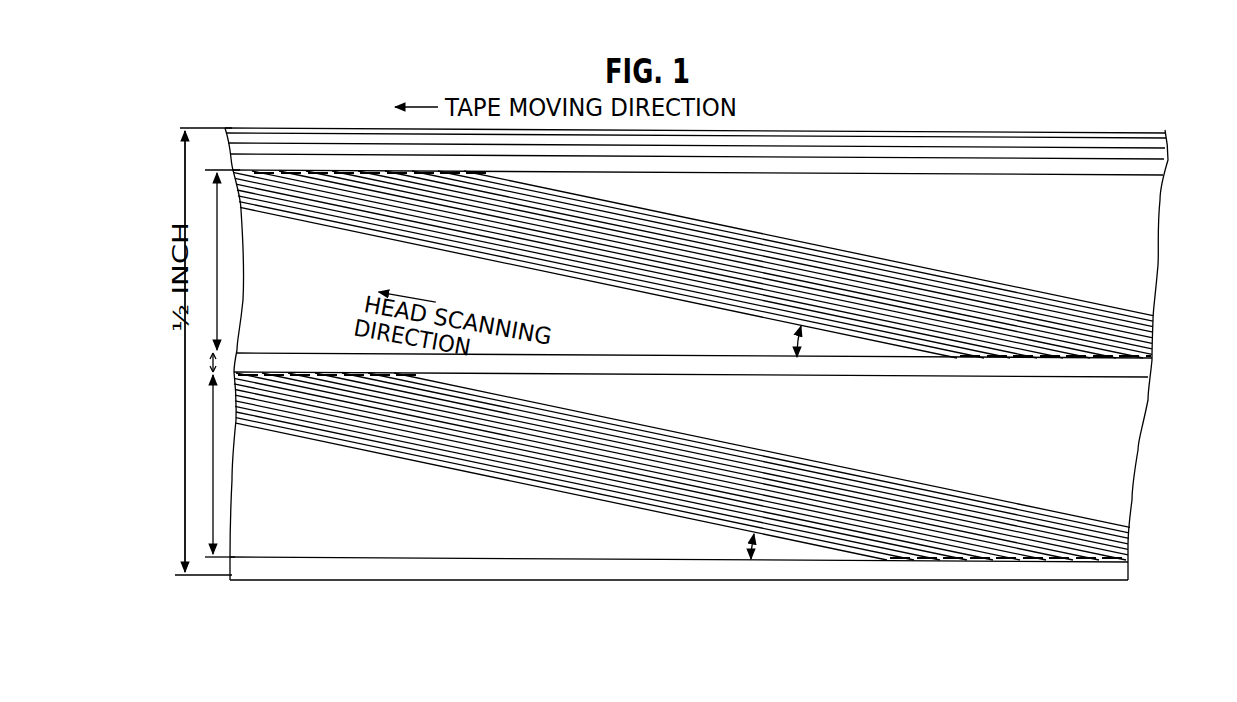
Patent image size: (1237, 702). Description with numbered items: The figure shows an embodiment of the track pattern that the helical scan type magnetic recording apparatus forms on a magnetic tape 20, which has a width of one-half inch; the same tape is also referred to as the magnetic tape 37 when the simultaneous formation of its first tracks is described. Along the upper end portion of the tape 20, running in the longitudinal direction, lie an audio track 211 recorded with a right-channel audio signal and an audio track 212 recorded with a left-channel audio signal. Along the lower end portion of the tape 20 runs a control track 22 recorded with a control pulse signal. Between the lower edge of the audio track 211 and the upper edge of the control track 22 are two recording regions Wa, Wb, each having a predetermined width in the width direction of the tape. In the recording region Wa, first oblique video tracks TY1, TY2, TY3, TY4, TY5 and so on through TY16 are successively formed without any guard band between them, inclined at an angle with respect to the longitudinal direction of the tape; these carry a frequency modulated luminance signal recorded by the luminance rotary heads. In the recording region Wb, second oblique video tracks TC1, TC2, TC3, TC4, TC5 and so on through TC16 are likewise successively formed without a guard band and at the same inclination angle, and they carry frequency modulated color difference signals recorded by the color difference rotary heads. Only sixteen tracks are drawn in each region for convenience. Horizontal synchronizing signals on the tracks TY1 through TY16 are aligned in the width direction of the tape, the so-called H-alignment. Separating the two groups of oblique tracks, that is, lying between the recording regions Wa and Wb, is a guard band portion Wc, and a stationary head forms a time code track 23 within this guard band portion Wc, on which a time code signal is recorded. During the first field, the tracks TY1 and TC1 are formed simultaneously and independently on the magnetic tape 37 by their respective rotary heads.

The magnetic tape 20 is at (1153, 265).
The magnetic tape 37 is at (1188, 276).
The audio track 211 is at (982, 175).
The audio track 212 is at (860, 135).
The control track 22 is at (1128, 568).
The time code track 23 is at (1143, 366).
The second oblique track TC1 is at (309, 221).
The second oblique track TC2 is at (364, 228).
The second oblique track TC3 is at (407, 231).
The second oblique track TC4 is at (450, 236).
The second oblique track TC5 is at (493, 237).
The second oblique track TC16 is at (778, 236).
The first oblique track TY1 is at (312, 432).
The first oblique track TY2 is at (360, 439).
The first oblique track TY3 is at (405, 444).
The first oblique track TY4 is at (450, 449).
The first oblique track TY5 is at (493, 455).
The first oblique track TY16 is at (585, 413).
The recording region Wa is at (216, 466).
The recording region Wb is at (219, 260).
The guard band portion Wc is at (210, 364).